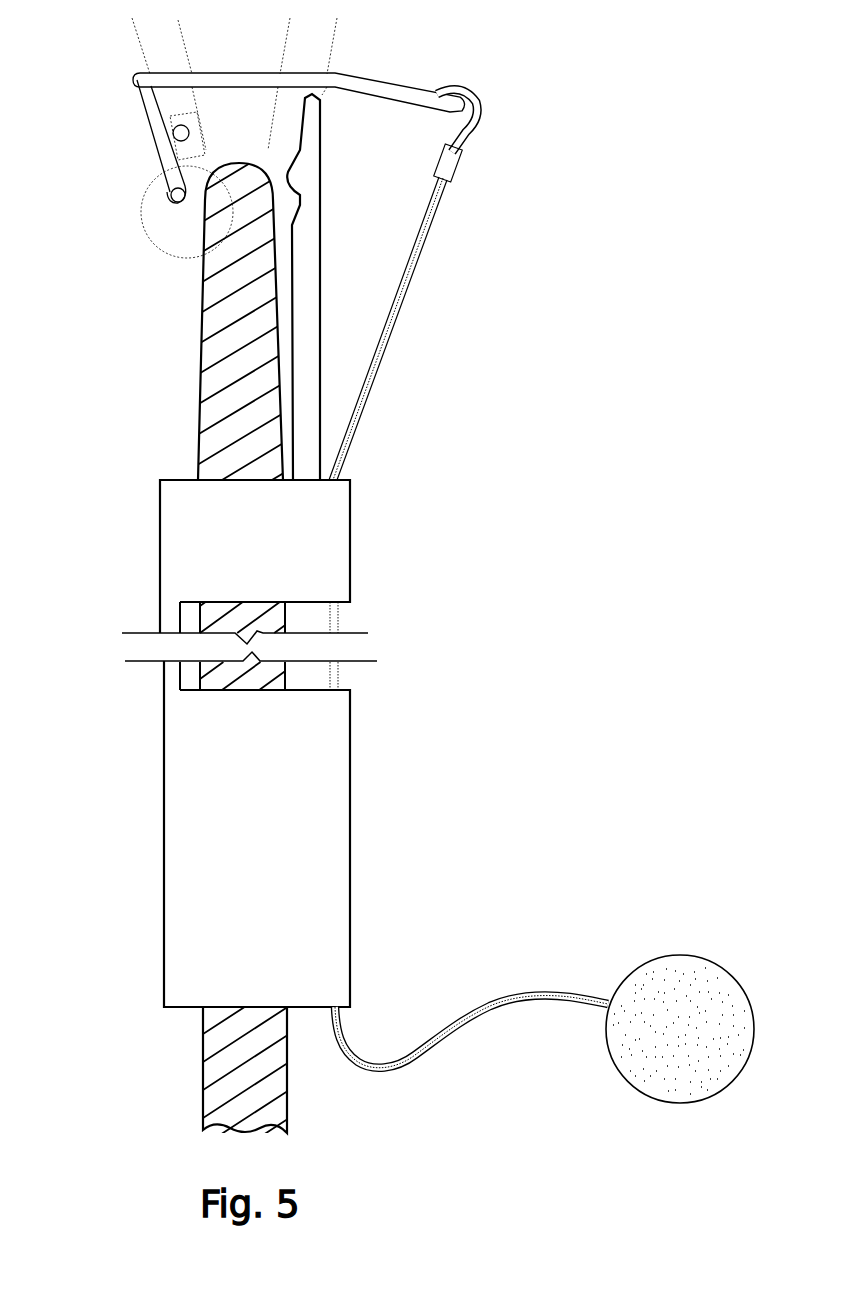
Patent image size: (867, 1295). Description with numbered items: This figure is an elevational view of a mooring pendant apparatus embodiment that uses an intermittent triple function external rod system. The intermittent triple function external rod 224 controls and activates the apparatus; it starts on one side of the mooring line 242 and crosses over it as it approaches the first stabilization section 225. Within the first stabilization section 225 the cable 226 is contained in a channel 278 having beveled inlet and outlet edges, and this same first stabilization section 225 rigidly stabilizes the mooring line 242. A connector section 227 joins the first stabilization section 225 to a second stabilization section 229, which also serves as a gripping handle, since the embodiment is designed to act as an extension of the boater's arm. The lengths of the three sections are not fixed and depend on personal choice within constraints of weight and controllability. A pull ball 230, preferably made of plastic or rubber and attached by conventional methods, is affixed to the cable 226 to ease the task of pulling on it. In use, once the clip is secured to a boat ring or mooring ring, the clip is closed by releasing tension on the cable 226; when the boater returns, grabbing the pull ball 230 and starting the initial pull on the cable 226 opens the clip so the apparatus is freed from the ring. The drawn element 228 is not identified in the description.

The intermittent triple function external rod 224 is at (322, 268).
The first stabilization section 225 is at (124, 551).
The cable 226 is at (378, 353).
The connector section 227 is at (110, 645).
The cord 228 is at (476, 1010).
The second stabilization section 229 is at (122, 852).
The pull ball 230 is at (686, 955).
The mooring line 242 is at (202, 1048).
The channel 278 is at (340, 633).